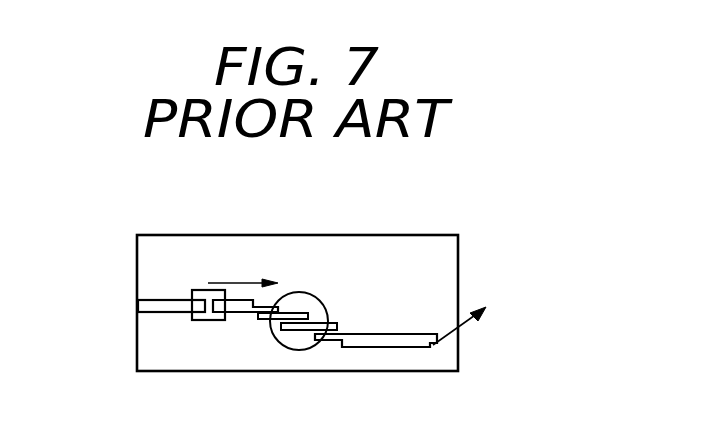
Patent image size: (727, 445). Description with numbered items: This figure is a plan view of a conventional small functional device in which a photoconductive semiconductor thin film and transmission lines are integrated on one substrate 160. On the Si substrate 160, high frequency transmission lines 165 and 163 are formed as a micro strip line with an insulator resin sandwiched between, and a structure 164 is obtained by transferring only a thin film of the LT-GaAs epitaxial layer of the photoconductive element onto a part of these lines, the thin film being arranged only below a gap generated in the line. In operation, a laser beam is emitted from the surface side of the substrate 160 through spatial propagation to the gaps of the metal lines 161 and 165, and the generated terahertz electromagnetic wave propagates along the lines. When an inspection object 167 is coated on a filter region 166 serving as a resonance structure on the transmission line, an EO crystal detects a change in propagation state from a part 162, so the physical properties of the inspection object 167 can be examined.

The substrate 160 is at (377, 256).
The metal line 161 is at (155, 302).
The part 162 is at (463, 323).
The high frequency transmission line 163 is at (406, 337).
The structure 164 is at (200, 300).
The high frequency transmission line 165 is at (237, 299).
The filter region 166 is at (296, 338).
The inspection object 167 is at (303, 292).